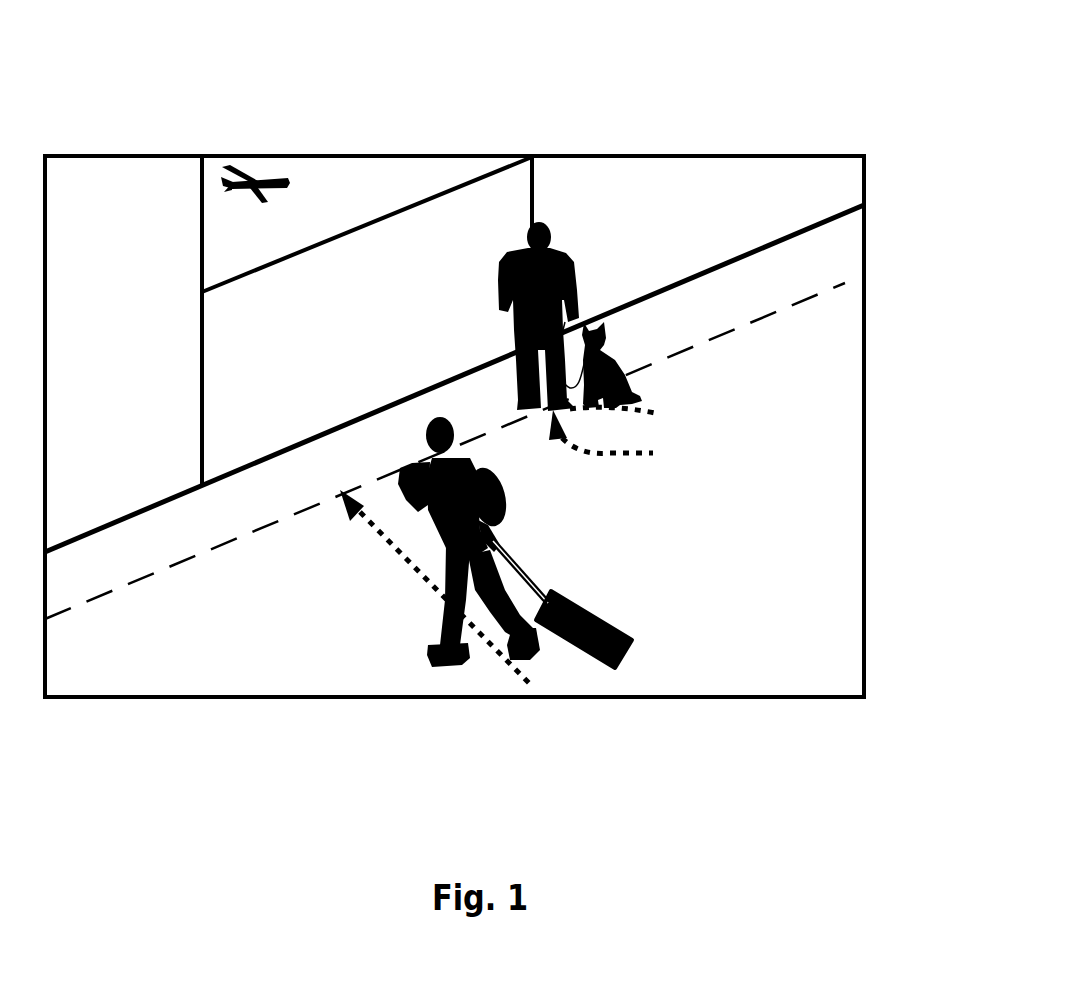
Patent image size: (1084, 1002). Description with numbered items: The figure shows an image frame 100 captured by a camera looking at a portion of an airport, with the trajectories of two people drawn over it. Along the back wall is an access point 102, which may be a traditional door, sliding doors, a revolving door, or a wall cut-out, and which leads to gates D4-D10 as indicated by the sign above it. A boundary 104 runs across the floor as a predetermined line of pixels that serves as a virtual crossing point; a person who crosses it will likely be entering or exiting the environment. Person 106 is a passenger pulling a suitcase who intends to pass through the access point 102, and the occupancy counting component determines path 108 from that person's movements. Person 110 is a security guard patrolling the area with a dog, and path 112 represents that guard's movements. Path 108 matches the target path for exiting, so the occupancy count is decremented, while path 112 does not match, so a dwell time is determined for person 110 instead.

The image frame 100 is at (490, 31).
The access point 102 is at (400, 235).
The boundary 104 is at (90, 600).
The person 106 is at (530, 643).
The path 108 is at (440, 592).
The person 110 is at (548, 236).
The path 112 is at (678, 428).